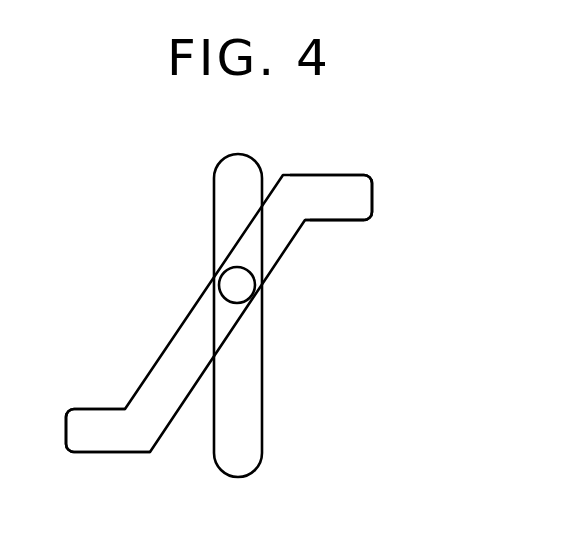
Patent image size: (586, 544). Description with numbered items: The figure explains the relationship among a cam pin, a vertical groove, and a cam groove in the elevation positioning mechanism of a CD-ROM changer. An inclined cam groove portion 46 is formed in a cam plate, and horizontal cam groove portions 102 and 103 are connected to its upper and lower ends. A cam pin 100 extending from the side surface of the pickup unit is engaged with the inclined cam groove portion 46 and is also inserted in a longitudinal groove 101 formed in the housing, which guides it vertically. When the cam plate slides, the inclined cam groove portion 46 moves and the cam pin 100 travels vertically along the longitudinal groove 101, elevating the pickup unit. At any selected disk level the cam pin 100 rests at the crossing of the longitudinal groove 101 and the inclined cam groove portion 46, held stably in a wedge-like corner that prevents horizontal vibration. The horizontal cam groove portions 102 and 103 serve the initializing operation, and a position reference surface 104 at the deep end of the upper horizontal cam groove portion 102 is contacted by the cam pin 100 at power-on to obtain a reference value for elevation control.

The inclined cam groove portion 46 is at (178, 331).
The cam pin 100 is at (243, 284).
The longitudinal groove 101 is at (260, 372).
The upper horizontal cam groove portion 102 is at (334, 217).
The lower horizontal cam groove portion 103 is at (120, 452).
The position reference surface 104 is at (372, 190).